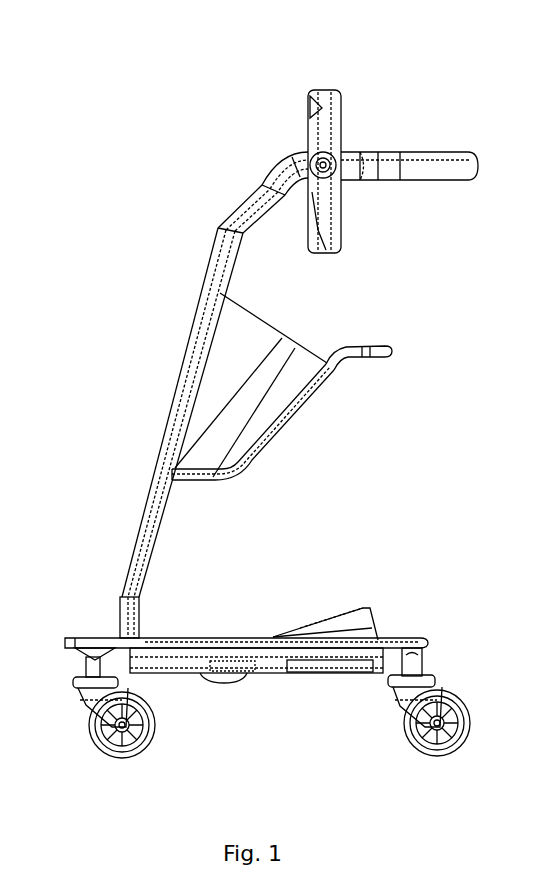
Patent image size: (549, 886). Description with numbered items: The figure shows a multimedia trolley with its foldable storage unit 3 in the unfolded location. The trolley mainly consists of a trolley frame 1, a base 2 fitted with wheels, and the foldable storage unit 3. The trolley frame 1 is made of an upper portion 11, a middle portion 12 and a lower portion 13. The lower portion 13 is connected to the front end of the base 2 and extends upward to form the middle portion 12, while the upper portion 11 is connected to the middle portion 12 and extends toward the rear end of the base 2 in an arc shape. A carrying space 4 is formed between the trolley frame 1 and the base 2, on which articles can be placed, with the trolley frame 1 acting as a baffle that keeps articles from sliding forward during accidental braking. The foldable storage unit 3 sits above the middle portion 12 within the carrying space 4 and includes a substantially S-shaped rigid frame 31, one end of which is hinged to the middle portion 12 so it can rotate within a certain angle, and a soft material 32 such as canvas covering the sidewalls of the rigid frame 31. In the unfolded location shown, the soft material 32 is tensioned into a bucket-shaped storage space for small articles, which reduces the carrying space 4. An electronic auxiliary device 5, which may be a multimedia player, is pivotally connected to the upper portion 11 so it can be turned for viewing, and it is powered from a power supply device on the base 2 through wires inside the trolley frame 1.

The trolley frame 1 is at (163, 366).
The upper portion 11 is at (270, 165).
The middle portion 12 is at (195, 303).
The lower portion 13 is at (118, 583).
The base 2 is at (98, 637).
The foldable storage unit 3 is at (311, 376).
The rigid frame 31 is at (257, 457).
The soft material 32 is at (270, 332).
The carrying space 4 is at (245, 551).
The electronic auxiliary device 5 is at (337, 95).